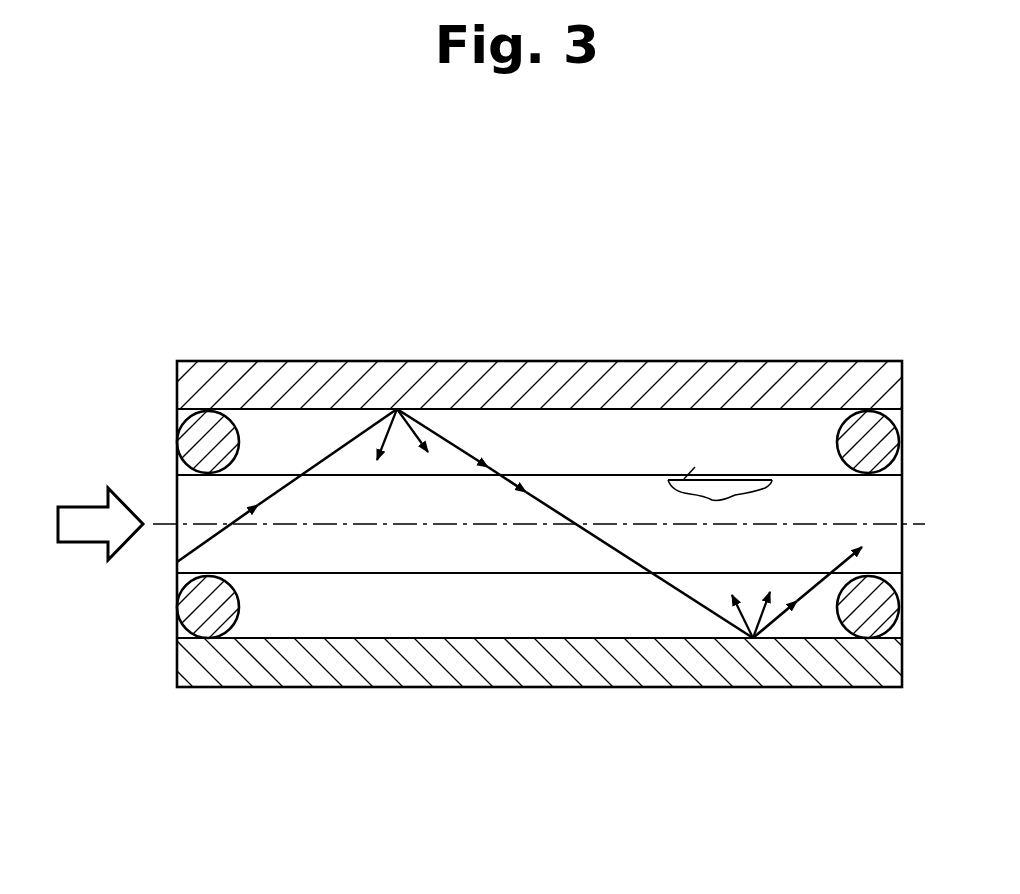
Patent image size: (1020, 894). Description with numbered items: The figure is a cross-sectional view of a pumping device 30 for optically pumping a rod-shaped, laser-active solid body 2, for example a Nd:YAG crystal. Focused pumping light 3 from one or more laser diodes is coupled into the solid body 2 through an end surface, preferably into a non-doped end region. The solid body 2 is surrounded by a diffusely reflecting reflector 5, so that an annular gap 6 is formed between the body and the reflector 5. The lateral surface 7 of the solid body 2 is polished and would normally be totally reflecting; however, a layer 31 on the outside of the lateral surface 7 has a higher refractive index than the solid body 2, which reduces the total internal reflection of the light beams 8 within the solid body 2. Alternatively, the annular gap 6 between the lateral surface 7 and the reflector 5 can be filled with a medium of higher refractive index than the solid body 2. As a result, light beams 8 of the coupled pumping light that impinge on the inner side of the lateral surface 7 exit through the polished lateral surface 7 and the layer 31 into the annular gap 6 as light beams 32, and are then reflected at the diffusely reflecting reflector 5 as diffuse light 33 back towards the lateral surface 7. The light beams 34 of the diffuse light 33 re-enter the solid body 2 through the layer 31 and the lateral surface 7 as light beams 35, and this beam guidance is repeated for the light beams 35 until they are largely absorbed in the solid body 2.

The pumping device 30 is at (538, 418).
The laser-active solid body 2 is at (712, 488).
The pumping light 3 is at (84, 530).
The diffusely reflecting reflector 5 is at (563, 672).
The annular gap 6 is at (612, 623).
The lateral surface 7 is at (683, 478).
The light beams 8 is at (229, 524).
The layer 31 is at (752, 478).
The light beams 32 is at (347, 440).
The diffuse light 33 is at (401, 445).
The light beams 34 is at (447, 440).
The light beams 35 is at (557, 503).